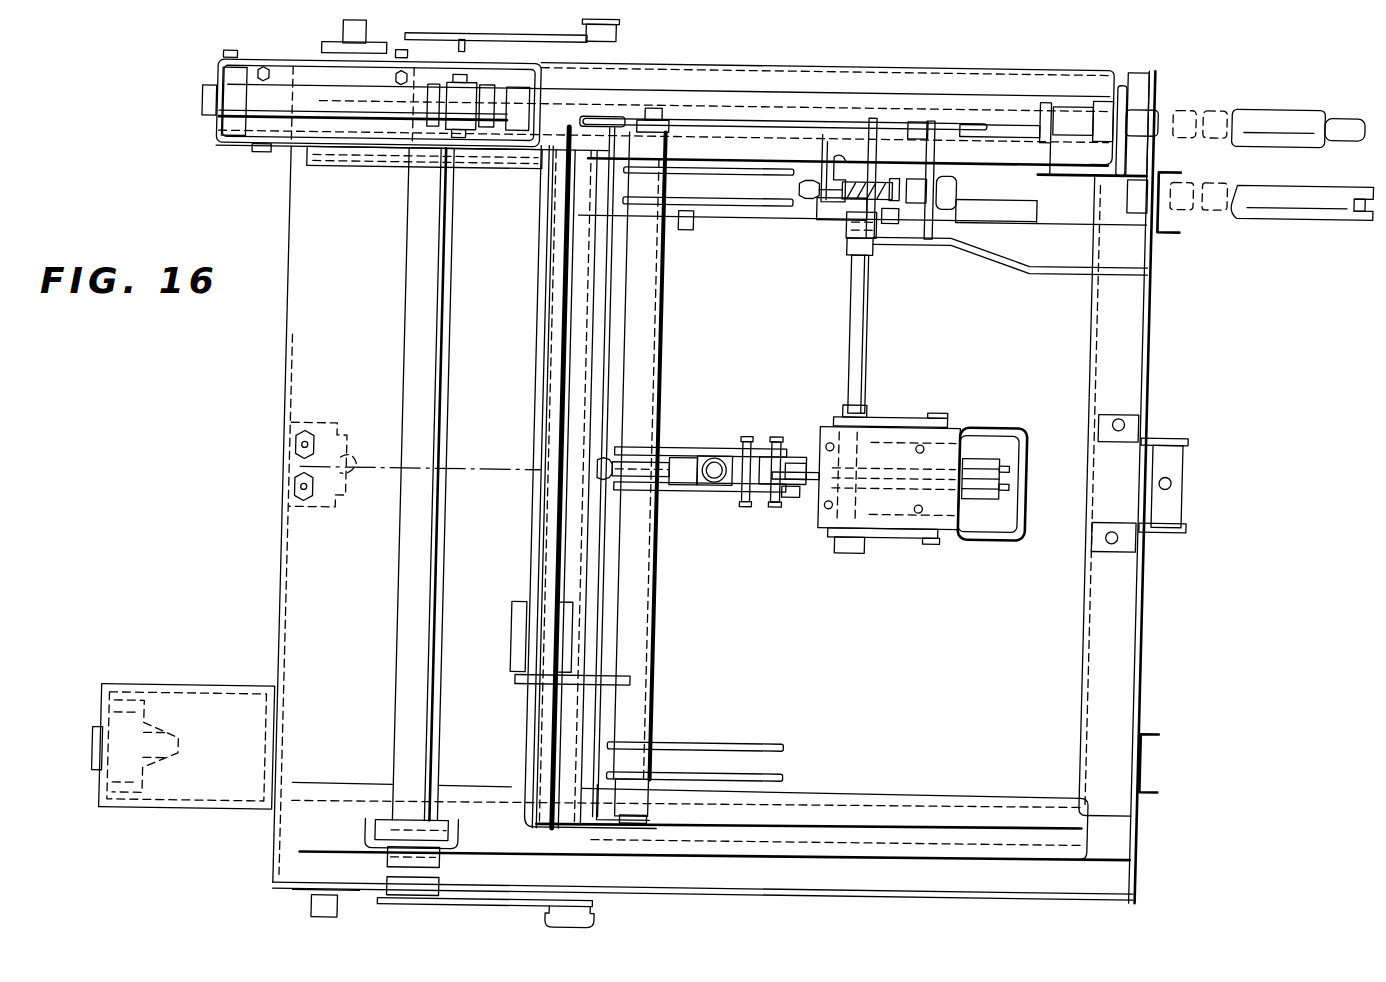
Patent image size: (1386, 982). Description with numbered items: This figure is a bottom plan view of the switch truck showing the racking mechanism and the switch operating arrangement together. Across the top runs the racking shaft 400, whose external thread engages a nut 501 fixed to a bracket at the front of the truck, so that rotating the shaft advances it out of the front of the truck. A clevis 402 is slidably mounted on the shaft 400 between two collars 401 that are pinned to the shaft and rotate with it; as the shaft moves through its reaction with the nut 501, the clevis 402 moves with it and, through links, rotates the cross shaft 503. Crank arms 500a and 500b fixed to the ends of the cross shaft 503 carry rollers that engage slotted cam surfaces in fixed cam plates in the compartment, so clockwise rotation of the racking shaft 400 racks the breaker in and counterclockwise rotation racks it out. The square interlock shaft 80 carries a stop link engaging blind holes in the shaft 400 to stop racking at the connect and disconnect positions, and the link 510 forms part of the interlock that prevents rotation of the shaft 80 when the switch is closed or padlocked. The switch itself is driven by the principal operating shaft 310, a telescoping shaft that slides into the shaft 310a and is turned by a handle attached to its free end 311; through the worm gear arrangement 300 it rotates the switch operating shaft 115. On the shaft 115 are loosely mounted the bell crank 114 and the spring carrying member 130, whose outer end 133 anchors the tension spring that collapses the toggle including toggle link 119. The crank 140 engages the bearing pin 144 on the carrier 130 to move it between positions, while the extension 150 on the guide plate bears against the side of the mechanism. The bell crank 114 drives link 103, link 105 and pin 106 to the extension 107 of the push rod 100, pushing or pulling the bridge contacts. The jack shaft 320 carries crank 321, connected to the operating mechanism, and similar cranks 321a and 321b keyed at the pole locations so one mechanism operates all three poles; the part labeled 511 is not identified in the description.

The interlock shaft 80 is at (760, 118).
The push rod 100 is at (712, 482).
The link 103 is at (795, 496).
The link 105 is at (764, 452).
The pin 106 is at (747, 441).
The extension 107 is at (740, 448).
The bell crank 114 is at (806, 468).
The switch operating shaft 115 is at (845, 348).
The toggle link 119 is at (969, 465).
The spring carrying member 130 is at (993, 537).
The outer end 133 is at (1010, 522).
The crank 140 is at (906, 413).
The bearing pin 144 is at (932, 413).
The extension 150 is at (895, 448).
The worm gear arrangement 300 is at (843, 200).
The principal operating shaft 310 is at (906, 202).
The shaft 310a is at (1046, 213).
The free end 311 is at (1362, 190).
The jack shaft 320 is at (660, 626).
The crank 321 is at (690, 447).
The crank 321a is at (729, 212).
The crank 321b is at (757, 727).
The racking shaft 400 is at (356, 127).
The collar 401 is at (421, 131).
The clevis 402 is at (458, 133).
The crank arm 500a is at (612, 42).
The crank arm 500b is at (605, 912).
The nut 501 is at (1118, 85).
The cross shaft 503 is at (405, 647).
The link 510 is at (920, 118).
The shelf 511 is at (938, 159).